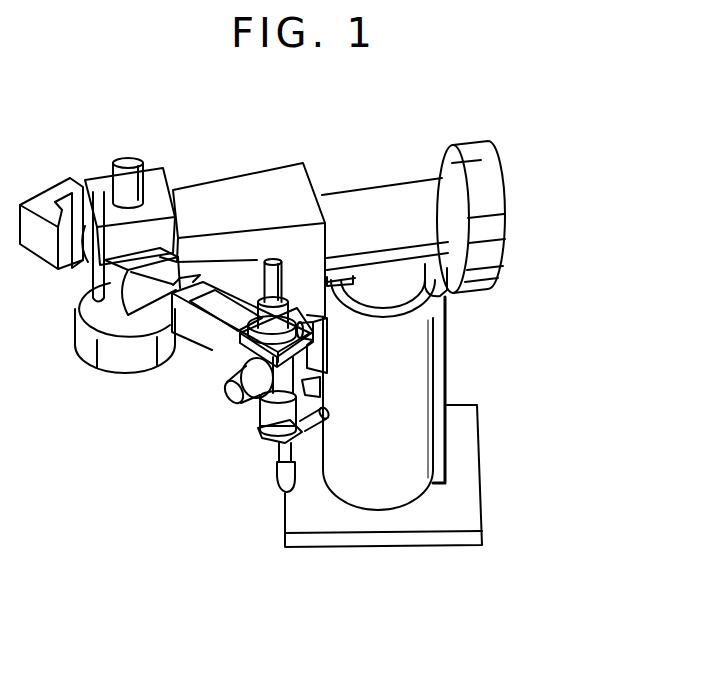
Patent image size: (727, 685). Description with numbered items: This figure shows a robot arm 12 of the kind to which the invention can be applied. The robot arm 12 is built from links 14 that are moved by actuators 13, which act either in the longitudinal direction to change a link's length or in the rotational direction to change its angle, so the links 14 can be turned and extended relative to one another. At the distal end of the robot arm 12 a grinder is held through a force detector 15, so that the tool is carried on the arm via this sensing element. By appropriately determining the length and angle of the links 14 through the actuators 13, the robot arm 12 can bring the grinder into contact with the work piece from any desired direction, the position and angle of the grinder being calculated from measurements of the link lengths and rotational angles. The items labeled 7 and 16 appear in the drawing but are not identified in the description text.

The shaft 7 is at (129, 161).
The robot arm 12 is at (514, 377).
The actuators 13 is at (312, 290).
The links 14 is at (237, 196).
The force detector 15 is at (266, 416).
The nozzle 16 is at (278, 481).